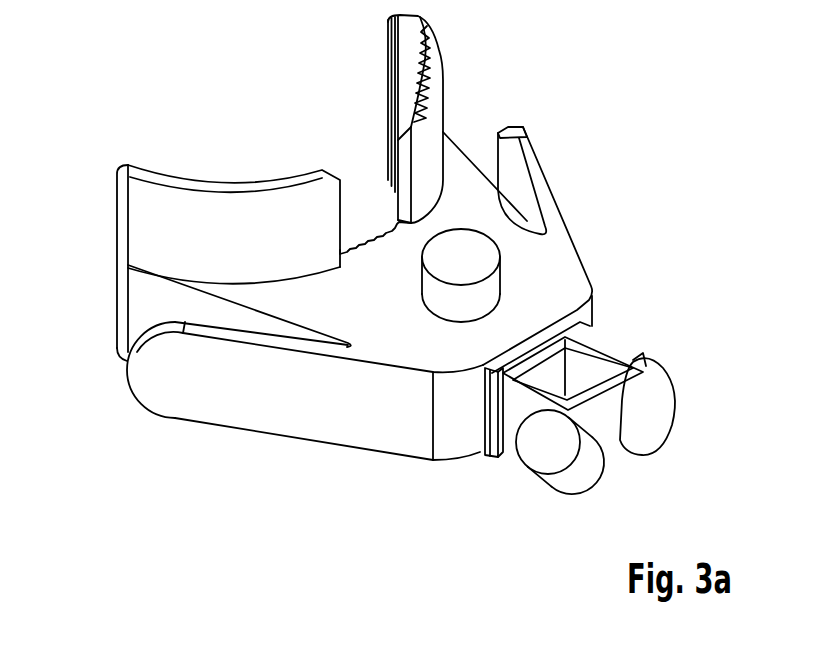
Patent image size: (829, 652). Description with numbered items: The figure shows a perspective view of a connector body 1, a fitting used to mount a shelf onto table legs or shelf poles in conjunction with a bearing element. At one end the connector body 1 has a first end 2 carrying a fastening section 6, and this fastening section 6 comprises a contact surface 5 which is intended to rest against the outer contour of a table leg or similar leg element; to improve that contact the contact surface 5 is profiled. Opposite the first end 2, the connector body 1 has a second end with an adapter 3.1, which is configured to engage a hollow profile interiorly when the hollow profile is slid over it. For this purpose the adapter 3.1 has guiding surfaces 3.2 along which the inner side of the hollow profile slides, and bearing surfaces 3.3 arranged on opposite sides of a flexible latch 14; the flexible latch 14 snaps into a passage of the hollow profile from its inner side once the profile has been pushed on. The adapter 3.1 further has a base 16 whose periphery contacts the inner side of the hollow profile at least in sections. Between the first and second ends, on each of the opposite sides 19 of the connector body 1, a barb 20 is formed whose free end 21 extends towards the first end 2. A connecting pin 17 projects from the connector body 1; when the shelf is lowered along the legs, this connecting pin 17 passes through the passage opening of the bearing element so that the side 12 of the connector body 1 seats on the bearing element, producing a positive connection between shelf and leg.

The connector body 1 is at (635, 200).
The first end 2 is at (368, 242).
The adapter 3.1 is at (643, 427).
The guiding surfaces 3.2 is at (607, 352).
The bearing surfaces 3.3 is at (512, 432).
The contact surface 5 is at (400, 60).
The fastening section 6 is at (249, 148).
The side 12 is at (567, 285).
The flexible latch 14 is at (562, 465).
The base 16 is at (490, 418).
The connecting pin 17 is at (468, 258).
The opposite sides 19 is at (143, 303).
The barb 20 is at (280, 408).
The free end 21 is at (507, 128).